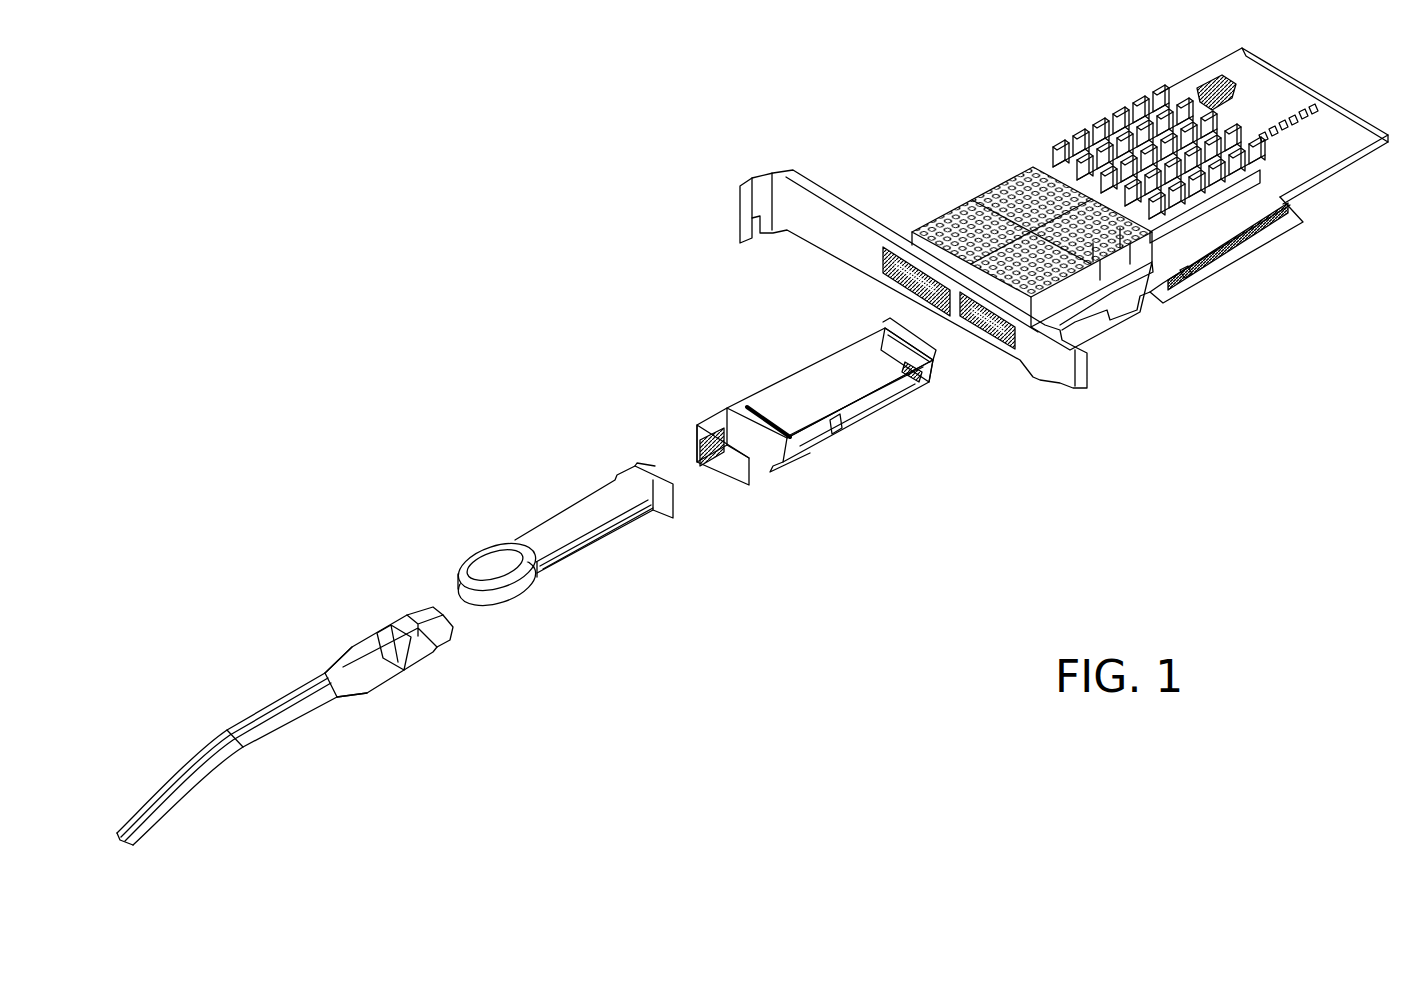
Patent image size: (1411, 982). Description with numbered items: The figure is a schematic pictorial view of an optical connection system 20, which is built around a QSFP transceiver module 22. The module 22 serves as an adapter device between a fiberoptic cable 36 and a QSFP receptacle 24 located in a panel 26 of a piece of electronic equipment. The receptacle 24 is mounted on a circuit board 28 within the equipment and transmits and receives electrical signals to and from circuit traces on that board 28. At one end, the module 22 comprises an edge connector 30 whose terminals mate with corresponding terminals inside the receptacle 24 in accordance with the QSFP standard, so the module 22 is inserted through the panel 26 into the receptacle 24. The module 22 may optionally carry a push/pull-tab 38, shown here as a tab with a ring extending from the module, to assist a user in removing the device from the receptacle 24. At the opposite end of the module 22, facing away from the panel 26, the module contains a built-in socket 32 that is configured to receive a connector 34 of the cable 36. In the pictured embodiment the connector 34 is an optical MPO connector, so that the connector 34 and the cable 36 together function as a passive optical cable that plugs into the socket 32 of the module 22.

The optical connection system 20 is at (503, 170).
The QSFP transceiver module 22 is at (824, 372).
The QSFP receptacle 24 is at (1087, 293).
The panel 26 is at (823, 207).
The host circuit board 28 is at (1347, 148).
The edge connector 30 is at (910, 343).
The socket 32 is at (708, 461).
The connector 34 is at (452, 634).
The fiberoptic cable 36 is at (181, 792).
The push/pull-tab 38 is at (541, 545).